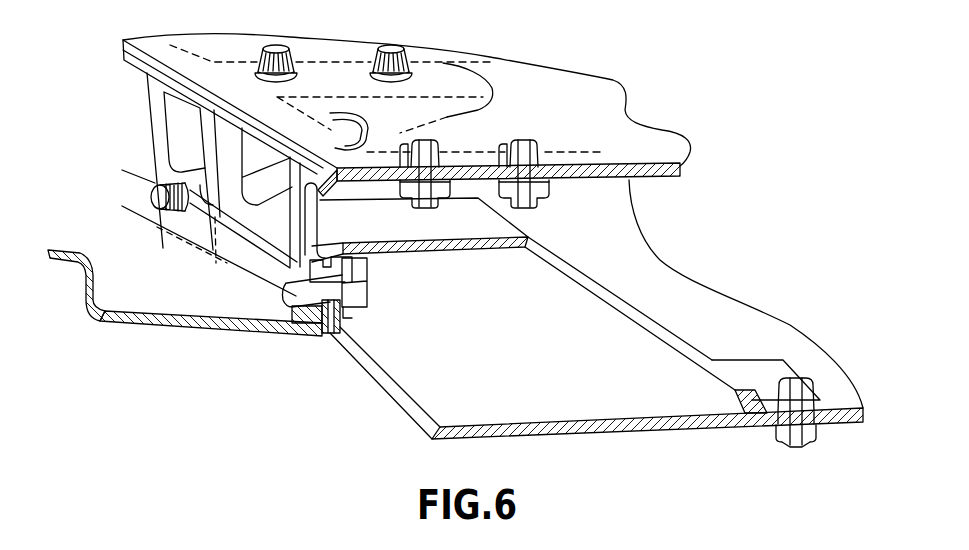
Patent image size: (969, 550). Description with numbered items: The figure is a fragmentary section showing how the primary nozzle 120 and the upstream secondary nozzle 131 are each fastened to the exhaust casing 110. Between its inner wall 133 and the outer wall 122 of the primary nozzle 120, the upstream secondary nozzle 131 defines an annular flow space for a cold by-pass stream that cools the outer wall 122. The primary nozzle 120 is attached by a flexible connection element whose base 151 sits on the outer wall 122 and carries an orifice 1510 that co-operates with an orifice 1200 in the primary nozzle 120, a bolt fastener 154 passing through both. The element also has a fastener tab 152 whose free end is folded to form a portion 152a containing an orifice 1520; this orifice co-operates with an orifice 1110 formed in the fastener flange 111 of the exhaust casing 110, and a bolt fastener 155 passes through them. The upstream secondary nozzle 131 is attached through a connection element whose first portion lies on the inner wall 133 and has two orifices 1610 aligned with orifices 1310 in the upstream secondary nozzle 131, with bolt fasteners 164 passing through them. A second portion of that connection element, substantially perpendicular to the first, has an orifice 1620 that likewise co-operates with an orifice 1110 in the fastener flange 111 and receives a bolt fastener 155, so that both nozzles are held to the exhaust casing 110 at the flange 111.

The exhaust casing 110 is at (140, 302).
The fastener flange 111 is at (260, 268).
The orifices 1110 is at (290, 310).
The primary nozzle 120 is at (543, 392).
The outer wall 122 is at (440, 400).
The orifice 1200 is at (774, 448).
The upstream secondary nozzle 131 is at (543, 67).
The orifices 1310 is at (437, 158).
The inner wall 133 is at (650, 172).
The base 151 is at (760, 367).
The orifice 1510 is at (803, 441).
The fastener tab 152 is at (572, 265).
The folded portion 152a is at (347, 312).
The orifice 1520 is at (350, 337).
The bolt fasteners 154 is at (802, 385).
The bolt fasteners 155 is at (173, 185).
The bolt fasteners 164 is at (388, 47).
The orifices 1610 is at (416, 182).
The orifice 1620 is at (358, 277).